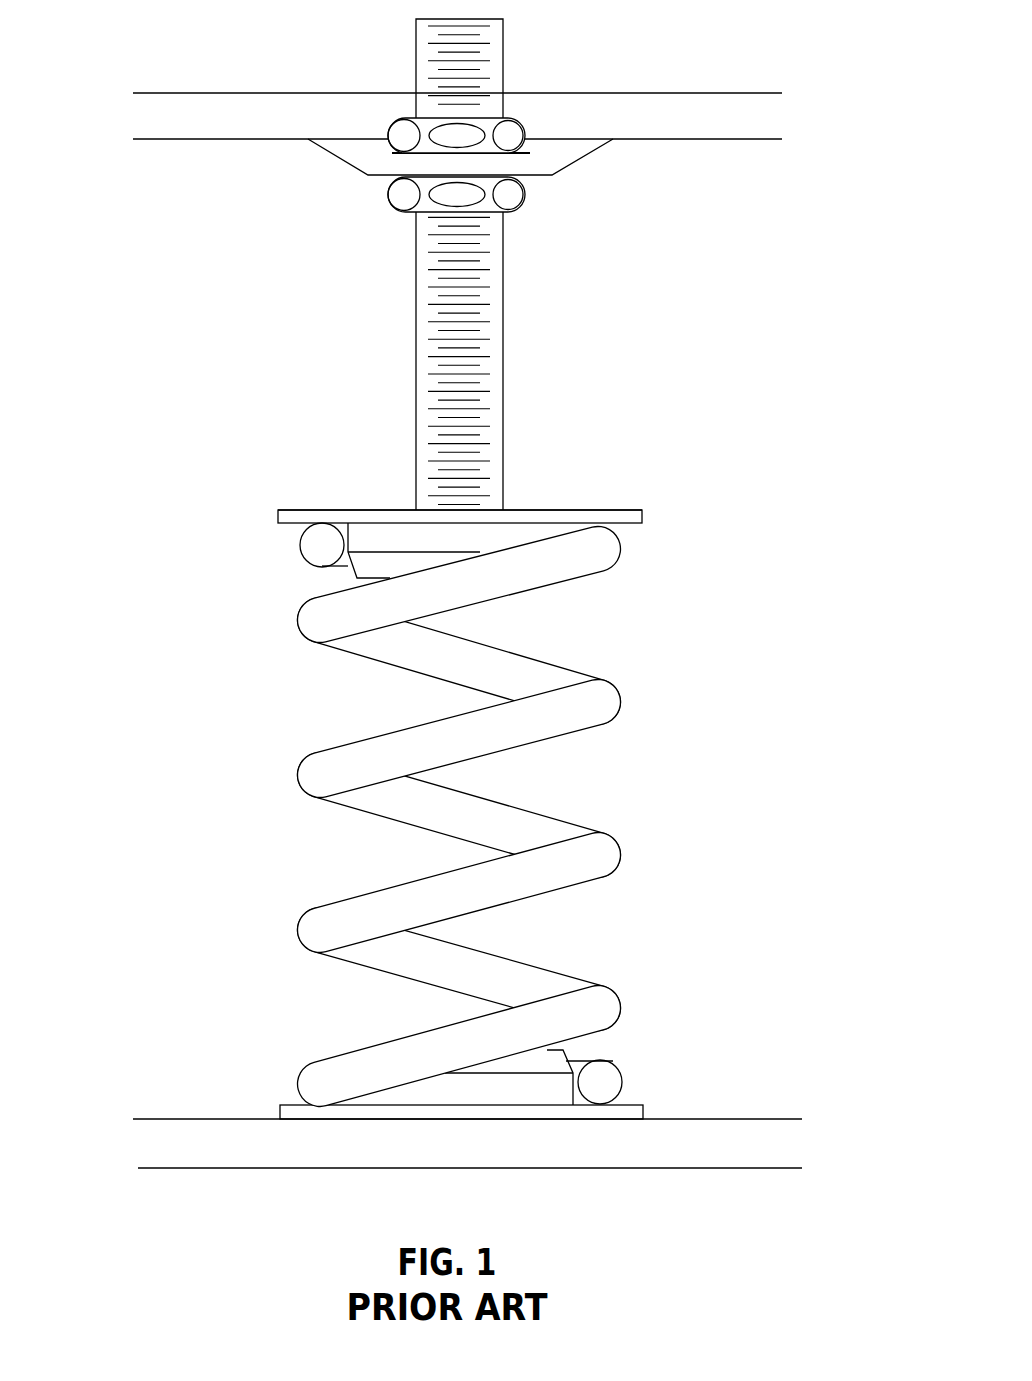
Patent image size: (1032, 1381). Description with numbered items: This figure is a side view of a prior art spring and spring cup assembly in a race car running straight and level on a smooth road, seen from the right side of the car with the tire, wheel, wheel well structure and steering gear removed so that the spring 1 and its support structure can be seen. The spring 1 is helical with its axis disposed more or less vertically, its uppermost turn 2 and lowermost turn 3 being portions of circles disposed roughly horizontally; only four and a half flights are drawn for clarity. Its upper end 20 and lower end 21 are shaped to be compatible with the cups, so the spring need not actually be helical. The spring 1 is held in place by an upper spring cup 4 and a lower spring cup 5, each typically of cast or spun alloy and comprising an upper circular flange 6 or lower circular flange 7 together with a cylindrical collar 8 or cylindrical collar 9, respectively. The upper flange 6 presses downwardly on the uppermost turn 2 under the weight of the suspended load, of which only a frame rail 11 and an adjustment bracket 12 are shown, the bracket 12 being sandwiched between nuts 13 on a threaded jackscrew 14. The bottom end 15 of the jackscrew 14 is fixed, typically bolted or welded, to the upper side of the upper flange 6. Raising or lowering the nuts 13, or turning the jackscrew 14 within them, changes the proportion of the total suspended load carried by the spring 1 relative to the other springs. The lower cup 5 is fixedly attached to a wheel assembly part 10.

The spring 1 is at (547, 566).
The uppermost turn 2 is at (261, 541).
The lowermost turn 3 is at (491, 950).
The upper spring cup 4 is at (388, 518).
The lower spring cup 5 is at (491, 957).
The upper circular flange 6 is at (597, 515).
The lower circular flange 7 is at (620, 1112).
The cylindrical collar 8 is at (377, 562).
The cylindrical collar 9 is at (437, 1097).
The wheel assembly part 10 is at (620, 1150).
The frame rail 11 is at (712, 115).
The adjustment bracket 12 is at (558, 156).
The nuts 13 is at (457, 138).
The threaded jackscrew 14 is at (483, 290).
The bottom end 15 is at (490, 508).
The upper end 20 is at (323, 537).
The lower end 21 is at (598, 1080).